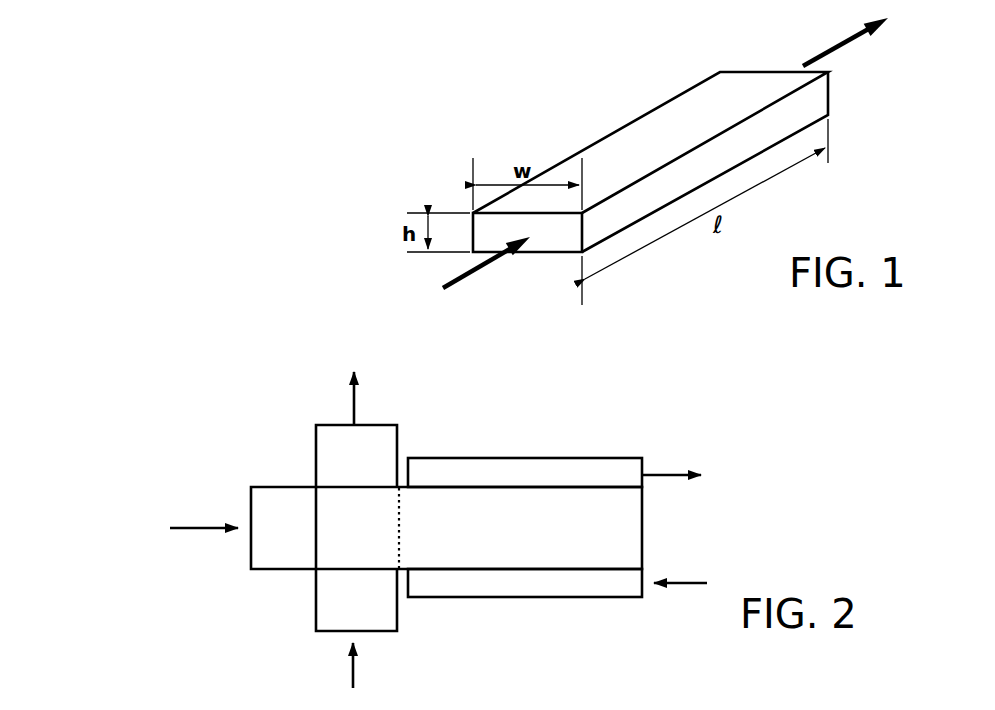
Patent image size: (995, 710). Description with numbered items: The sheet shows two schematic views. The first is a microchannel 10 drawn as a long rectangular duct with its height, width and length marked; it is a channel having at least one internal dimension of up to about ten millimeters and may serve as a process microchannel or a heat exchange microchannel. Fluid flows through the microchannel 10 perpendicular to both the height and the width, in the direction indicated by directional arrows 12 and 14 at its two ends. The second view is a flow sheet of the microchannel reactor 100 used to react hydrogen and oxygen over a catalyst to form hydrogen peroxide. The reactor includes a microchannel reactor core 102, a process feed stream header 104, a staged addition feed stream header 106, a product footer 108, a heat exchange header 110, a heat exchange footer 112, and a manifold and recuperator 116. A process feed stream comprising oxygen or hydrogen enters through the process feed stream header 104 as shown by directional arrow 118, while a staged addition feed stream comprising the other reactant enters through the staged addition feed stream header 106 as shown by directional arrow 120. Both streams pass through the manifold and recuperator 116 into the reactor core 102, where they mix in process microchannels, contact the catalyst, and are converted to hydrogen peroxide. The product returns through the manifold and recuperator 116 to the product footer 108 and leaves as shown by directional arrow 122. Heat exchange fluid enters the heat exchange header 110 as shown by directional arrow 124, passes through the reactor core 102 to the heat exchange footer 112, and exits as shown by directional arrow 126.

In FIG. 1, the microchannel 10 is at (622, 126).
In FIG. 1, the directional arrow 12 is at (458, 276).
In FIG. 1, the directional arrow 14 is at (818, 54).
In FIG. 2, the microchannel reactor 100 is at (426, 521).
In FIG. 2, the microchannel reactor core 102 is at (575, 508).
In FIG. 2, the process feed stream header 104 is at (280, 538).
In FIG. 2, the staged addition feed stream header 106 is at (340, 598).
In FIG. 2, the product footer 108 is at (328, 465).
In FIG. 2, the heat exchange header 110 is at (538, 585).
In FIG. 2, the heat exchange footer 112 is at (473, 470).
In FIG. 2, the manifold and recuperator 116 is at (353, 543).
In FIG. 2, the directional arrow 118 is at (172, 526).
In FIG. 2, the directional arrow 120 is at (357, 670).
In FIG. 2, the directional arrow 122 is at (352, 410).
In FIG. 2, the directional arrow 124 is at (683, 570).
In FIG. 2, the directional arrow 126 is at (673, 470).